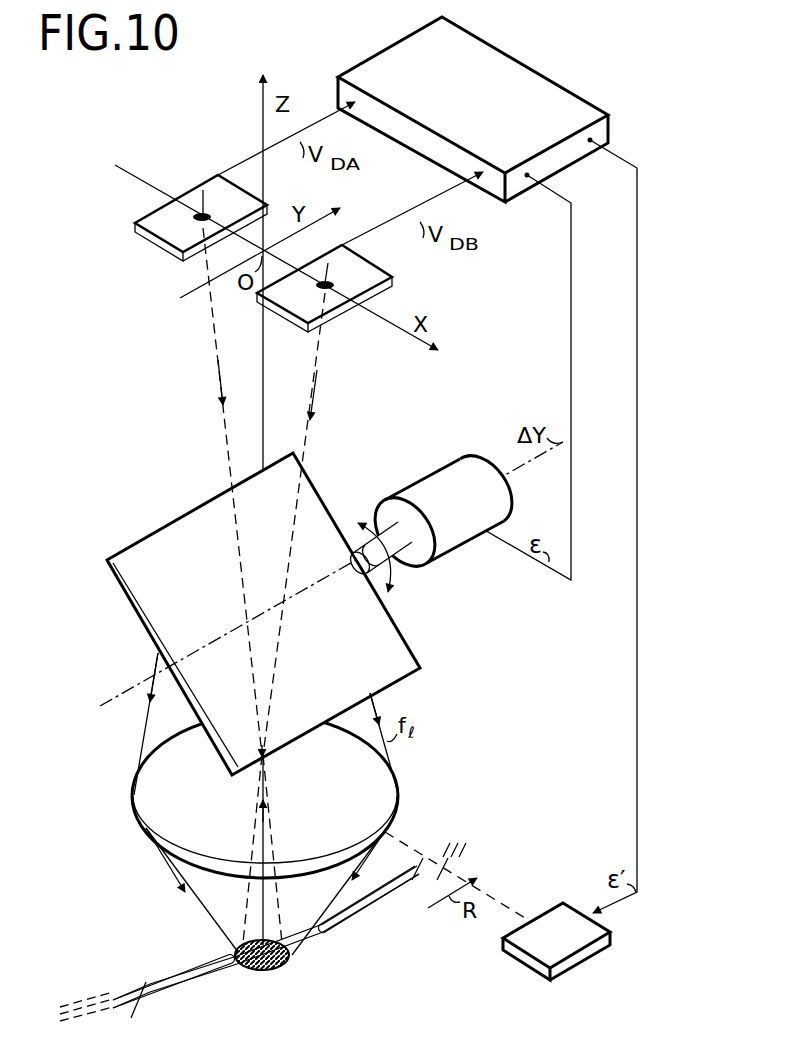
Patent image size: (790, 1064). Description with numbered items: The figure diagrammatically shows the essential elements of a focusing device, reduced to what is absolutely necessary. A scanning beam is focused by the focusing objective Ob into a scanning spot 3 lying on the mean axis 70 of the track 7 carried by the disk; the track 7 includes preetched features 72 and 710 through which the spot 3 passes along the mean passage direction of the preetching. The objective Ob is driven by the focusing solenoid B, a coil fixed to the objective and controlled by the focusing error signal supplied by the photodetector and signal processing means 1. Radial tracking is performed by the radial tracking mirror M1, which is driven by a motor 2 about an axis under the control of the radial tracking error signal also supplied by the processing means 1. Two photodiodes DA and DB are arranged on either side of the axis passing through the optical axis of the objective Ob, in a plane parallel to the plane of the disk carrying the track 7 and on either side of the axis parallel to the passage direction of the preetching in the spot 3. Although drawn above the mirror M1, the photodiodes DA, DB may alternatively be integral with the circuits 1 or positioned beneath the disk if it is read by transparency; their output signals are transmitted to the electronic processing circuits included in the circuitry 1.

The photodetector and signal processing means 1 is at (570, 58).
The motor 2 is at (437, 470).
The scanning spot 3 is at (240, 970).
The track 7 is at (80, 1003).
The mean axis 70 is at (114, 1010).
The track segments (pits) 72 is at (183, 982).
The pit 710 is at (287, 966).
The photodiode DA is at (203, 190).
The photodiode DB is at (340, 320).
The radial tracking mirror M1 is at (407, 640).
The focusing objective Ob is at (133, 792).
The focusing solenoid B is at (577, 957).